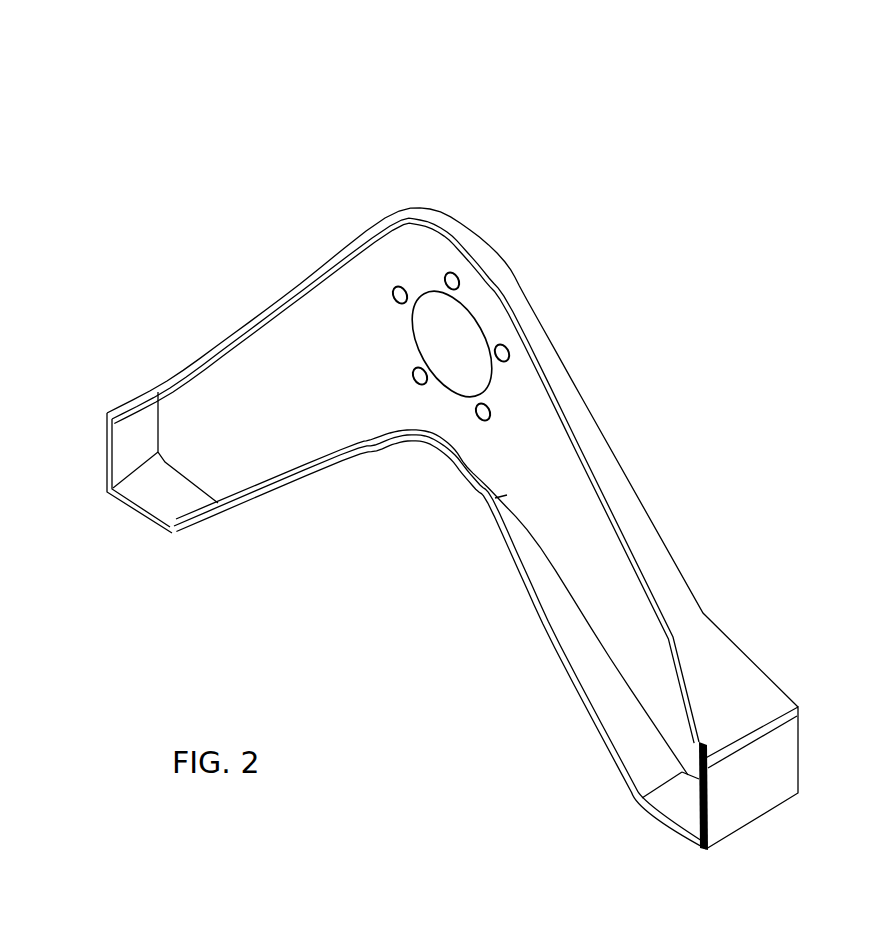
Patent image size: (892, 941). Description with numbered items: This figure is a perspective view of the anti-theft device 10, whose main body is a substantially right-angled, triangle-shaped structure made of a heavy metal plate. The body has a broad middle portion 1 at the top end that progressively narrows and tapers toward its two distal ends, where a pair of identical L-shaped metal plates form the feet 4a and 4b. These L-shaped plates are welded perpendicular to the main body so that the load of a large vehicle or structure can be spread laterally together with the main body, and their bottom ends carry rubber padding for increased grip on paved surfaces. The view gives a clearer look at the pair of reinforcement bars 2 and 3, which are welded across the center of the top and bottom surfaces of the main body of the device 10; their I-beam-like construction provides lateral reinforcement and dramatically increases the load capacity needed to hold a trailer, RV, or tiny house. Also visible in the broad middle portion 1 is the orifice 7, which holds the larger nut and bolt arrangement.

The anti-theft device 10 is at (430, 206).
The broad middle portion 1 is at (372, 270).
The reinforcement bar 2 is at (728, 672).
The reinforcement bar 3 is at (596, 727).
The foot 4a is at (140, 526).
The foot 4b is at (652, 826).
The orifice 7 is at (449, 349).